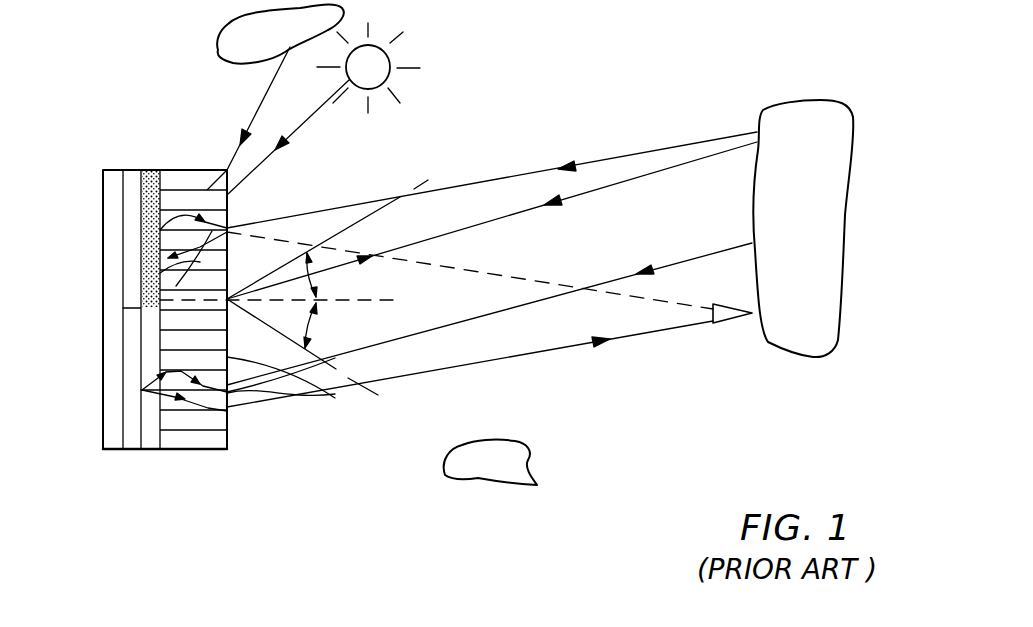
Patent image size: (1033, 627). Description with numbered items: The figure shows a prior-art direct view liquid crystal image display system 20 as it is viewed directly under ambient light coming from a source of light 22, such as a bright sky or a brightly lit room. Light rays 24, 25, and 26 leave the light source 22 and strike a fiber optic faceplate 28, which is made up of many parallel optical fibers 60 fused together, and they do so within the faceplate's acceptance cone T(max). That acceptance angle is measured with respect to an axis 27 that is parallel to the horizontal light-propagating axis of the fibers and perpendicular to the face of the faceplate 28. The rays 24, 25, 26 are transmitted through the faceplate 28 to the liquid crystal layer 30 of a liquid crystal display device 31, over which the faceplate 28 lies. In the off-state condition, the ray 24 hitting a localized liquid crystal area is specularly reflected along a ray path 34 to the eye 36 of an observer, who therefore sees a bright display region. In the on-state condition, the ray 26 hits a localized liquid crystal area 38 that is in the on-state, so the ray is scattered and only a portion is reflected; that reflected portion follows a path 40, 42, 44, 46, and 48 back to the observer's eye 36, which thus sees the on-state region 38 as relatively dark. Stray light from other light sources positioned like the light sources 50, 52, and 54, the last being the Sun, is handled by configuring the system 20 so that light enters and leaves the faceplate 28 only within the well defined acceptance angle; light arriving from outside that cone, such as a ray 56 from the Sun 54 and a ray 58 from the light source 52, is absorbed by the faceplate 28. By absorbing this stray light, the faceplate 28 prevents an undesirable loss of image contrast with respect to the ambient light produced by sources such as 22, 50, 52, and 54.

The direct view liquid crystal image display system 20 is at (133, 103).
The source of light 22 is at (775, 103).
The light ray 24 is at (692, 258).
The light ray 25 is at (628, 182).
The light ray 26 is at (618, 160).
The axis 27 is at (395, 300).
The fiber optic faceplate 28 is at (237, 448).
The liquid crystal layer 30 is at (150, 449).
The liquid crystal display device 31 is at (120, 473).
The ray path 34 is at (552, 348).
The eye 36 is at (737, 322).
The localized liquid crystal area 38 is at (150, 168).
The path 40 is at (235, 221).
The path 42 is at (178, 208).
The path 44 is at (147, 291).
The path 46 is at (232, 253).
The path 48 is at (530, 280).
The light source 50 is at (522, 463).
The light source 52 is at (218, 29).
The Sun 54 is at (393, 53).
The ray 56 is at (322, 106).
The ray 58 is at (262, 98).
The optical fiber 60 is at (227, 413).